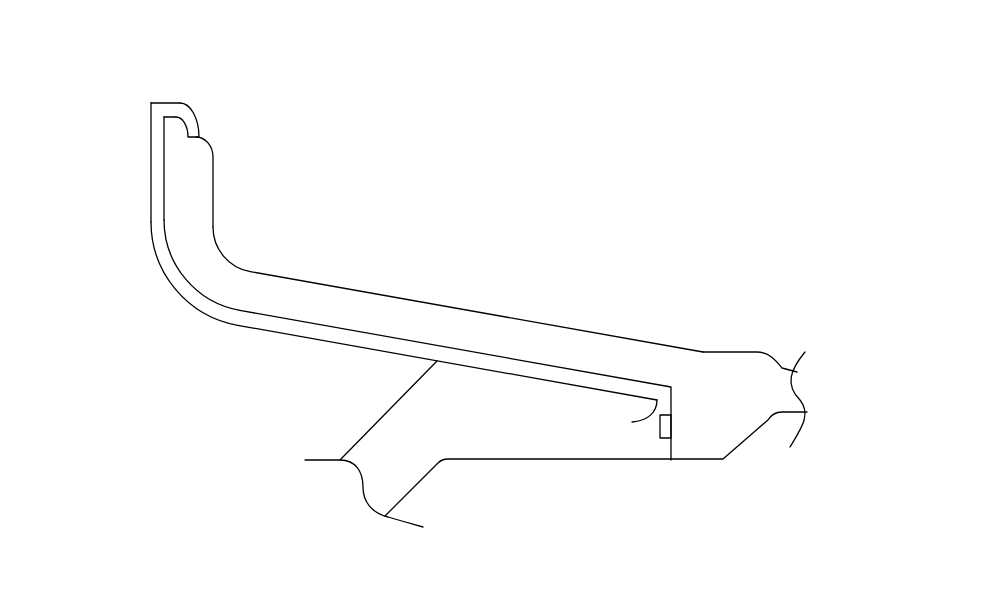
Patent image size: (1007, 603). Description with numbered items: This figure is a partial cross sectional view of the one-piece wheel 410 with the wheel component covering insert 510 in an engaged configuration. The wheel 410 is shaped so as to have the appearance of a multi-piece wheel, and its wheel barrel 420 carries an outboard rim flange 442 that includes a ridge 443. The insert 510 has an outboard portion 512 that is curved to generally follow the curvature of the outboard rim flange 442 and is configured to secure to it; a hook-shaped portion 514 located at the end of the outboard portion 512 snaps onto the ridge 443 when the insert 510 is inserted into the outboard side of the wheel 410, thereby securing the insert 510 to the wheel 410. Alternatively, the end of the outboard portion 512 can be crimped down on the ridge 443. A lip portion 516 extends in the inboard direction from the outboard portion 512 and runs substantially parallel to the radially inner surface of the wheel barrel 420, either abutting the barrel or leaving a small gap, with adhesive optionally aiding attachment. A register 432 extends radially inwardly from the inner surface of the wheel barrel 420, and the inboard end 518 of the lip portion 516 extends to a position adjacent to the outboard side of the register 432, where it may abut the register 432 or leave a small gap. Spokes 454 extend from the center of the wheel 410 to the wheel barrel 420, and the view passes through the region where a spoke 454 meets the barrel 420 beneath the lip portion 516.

The one-piece wheel 410 is at (680, 288).
The wheel barrel 420 is at (373, 293).
The register 432 is at (693, 462).
The outboard rim flange 442 is at (203, 163).
The ridge 443 is at (173, 127).
The spokes 454 is at (387, 450).
The wheel component covering insert 510 is at (179, 314).
The outboard portion 512 is at (157, 160).
The hook-shaped portion 514 is at (168, 102).
The lip portion 516 is at (312, 339).
The inboard end 518 is at (632, 422).